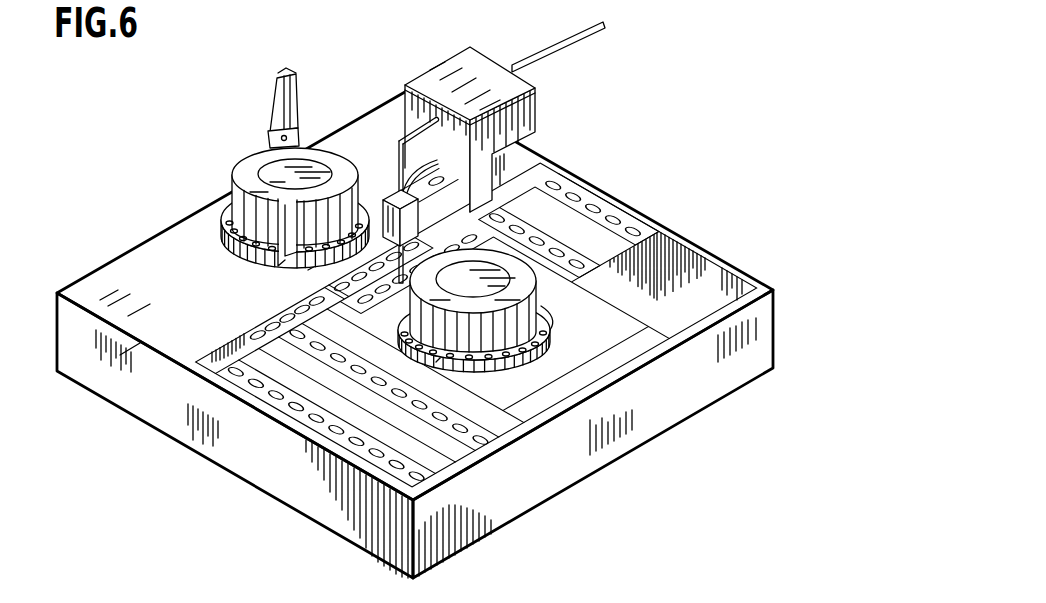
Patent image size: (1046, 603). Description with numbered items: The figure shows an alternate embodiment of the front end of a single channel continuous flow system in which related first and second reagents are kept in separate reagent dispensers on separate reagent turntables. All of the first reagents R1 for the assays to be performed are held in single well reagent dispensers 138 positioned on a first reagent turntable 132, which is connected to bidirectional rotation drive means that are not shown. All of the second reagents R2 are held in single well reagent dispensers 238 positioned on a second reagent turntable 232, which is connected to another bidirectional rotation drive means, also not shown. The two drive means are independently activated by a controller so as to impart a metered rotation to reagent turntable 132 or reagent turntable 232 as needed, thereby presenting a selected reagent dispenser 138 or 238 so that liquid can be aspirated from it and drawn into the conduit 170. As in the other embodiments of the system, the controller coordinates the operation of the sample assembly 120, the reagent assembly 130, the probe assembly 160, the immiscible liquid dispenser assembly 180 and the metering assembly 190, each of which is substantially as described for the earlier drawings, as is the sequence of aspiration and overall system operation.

The sample assembly 120 is at (231, 484).
The reagent assembly 130 is at (218, 253).
The first reagent turntable 132 is at (214, 214).
The single well reagent dispenser 138 is at (235, 174).
The probe assembly 160 is at (384, 170).
The conduit 170 is at (565, 48).
The immiscible liquid dispenser assembly 180 is at (462, 117).
The metering assembly 190 is at (483, 70).
The second reagent turntable 232 is at (551, 343).
The single well reagent dispenser 238 is at (553, 308).
The first reagent R1 is at (260, 239).
The second reagent R2 is at (436, 362).